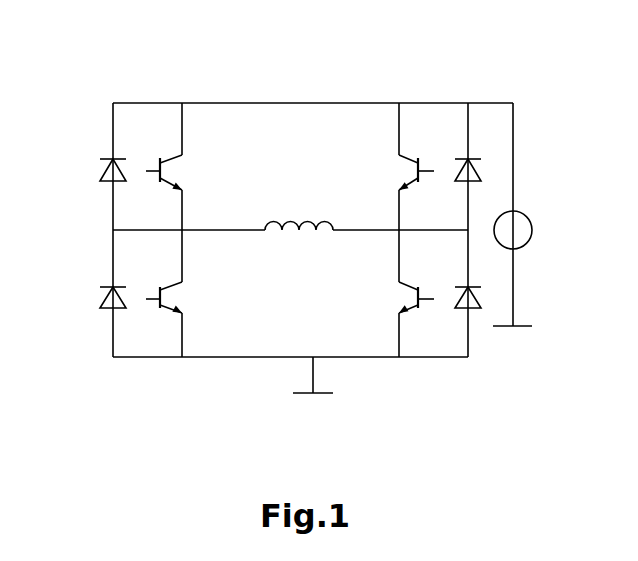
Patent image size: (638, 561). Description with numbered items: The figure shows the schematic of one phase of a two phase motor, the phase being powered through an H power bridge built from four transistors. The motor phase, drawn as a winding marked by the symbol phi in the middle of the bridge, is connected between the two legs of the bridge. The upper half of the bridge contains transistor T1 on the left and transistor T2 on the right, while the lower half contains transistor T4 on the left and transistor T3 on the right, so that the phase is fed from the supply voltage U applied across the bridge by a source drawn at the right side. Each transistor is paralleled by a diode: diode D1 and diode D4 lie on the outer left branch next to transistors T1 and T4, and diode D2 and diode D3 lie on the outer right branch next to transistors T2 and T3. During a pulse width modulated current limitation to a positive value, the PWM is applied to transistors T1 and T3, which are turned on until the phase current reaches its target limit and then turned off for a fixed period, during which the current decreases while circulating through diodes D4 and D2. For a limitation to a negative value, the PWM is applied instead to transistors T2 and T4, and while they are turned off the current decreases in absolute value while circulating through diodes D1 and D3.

The diode D1 is at (97, 152).
The diode D2 is at (480, 152).
The diode D3 is at (480, 279).
The diode D4 is at (97, 280).
The transistor T1 is at (185, 166).
The transistor T2 is at (397, 166).
The transistor T3 is at (397, 293).
The transistor T4 is at (184, 293).
The supply voltage source U is at (542, 208).